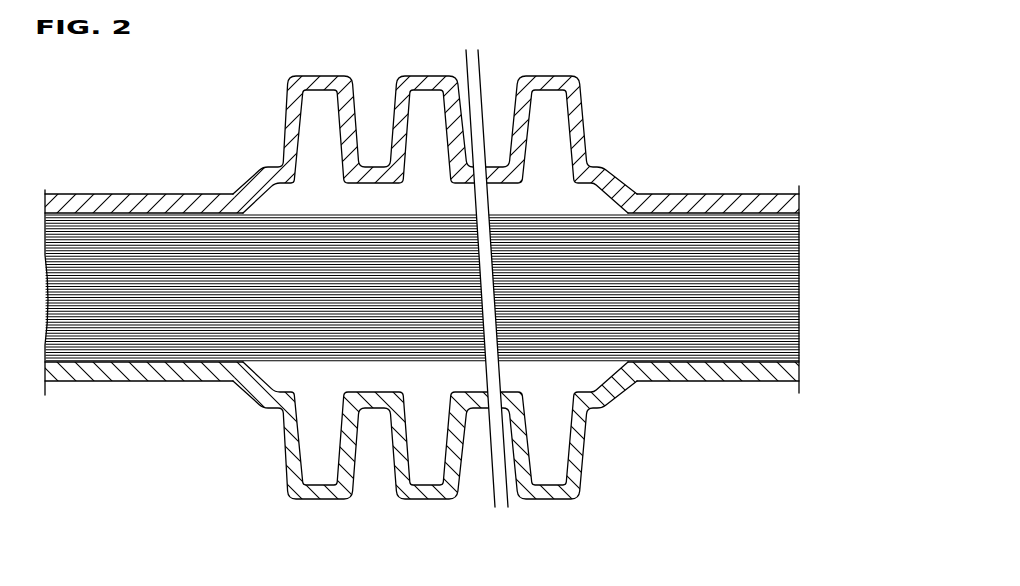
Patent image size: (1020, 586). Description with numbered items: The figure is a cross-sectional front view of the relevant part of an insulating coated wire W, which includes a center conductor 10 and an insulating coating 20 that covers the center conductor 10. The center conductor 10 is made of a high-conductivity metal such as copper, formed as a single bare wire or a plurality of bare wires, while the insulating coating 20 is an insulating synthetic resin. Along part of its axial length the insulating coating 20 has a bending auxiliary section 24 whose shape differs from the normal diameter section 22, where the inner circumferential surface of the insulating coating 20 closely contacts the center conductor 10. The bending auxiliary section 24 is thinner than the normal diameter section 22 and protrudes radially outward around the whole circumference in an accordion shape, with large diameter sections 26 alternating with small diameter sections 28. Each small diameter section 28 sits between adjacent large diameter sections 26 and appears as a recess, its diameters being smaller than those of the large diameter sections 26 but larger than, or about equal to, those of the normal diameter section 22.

The insulating coated wire W is at (422, 286).
The center conductor 10 is at (78, 223).
The insulating coating 20 is at (422, 286).
The normal diameter section 22 is at (163, 193).
The bending auxiliary section 24 is at (430, 286).
The large diameter section 26 is at (320, 74).
The small diameter section 28 is at (380, 166).